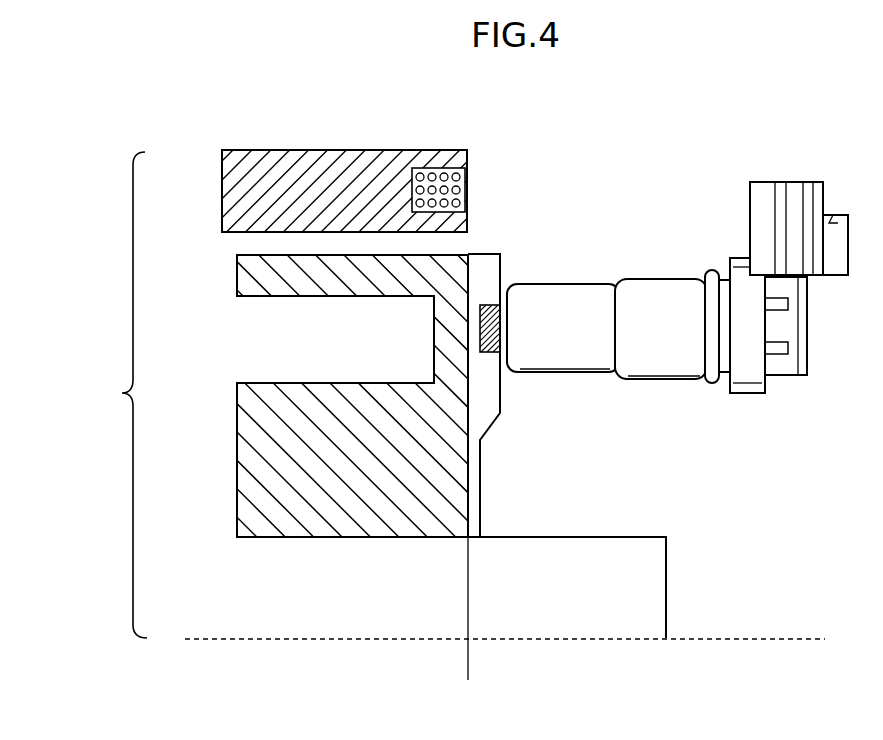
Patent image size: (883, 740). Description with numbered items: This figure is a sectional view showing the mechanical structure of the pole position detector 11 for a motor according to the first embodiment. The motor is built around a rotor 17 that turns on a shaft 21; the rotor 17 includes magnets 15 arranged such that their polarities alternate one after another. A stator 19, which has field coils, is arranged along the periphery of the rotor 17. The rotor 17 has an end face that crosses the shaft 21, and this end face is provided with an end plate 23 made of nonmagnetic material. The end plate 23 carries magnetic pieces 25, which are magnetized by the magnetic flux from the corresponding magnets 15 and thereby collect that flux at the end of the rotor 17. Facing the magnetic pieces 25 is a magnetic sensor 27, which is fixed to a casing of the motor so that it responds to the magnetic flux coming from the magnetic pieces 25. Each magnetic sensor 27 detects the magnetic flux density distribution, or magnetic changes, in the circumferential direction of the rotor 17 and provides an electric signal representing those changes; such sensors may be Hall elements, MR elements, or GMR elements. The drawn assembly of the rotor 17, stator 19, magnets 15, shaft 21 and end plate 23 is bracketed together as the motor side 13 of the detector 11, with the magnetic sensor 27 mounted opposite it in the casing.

The pole position detector 11 is at (565, 150).
The stator body 13 is at (122, 393).
The magnets 15 is at (268, 343).
The rotor 17 is at (348, 540).
The stator 19 is at (265, 165).
The shaft 21 is at (581, 607).
The end plate 23 is at (482, 254).
The magnetic pieces 25 is at (492, 355).
The magnetic sensors 27 is at (672, 378).